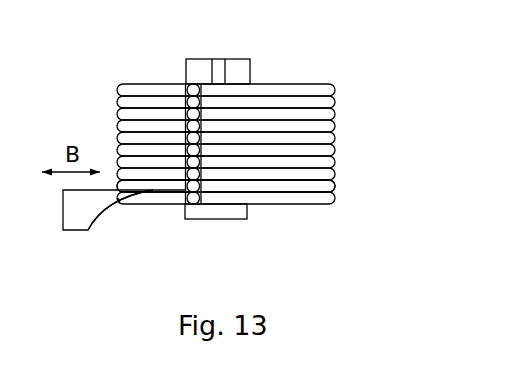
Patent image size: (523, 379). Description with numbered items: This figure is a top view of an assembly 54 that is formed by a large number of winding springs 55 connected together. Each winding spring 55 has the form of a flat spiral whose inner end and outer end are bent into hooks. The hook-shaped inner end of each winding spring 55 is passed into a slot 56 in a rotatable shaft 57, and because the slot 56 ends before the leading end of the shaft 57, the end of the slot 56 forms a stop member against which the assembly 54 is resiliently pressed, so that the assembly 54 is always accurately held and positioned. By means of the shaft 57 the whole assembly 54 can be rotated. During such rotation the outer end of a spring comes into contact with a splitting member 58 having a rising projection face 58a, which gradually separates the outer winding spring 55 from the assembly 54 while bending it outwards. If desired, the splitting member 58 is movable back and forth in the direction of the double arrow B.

The assembly 54 is at (350, 120).
The winding spring 55 is at (320, 185).
The slot 56 is at (215, 75).
The rotatable shaft 57 is at (220, 208).
The splitting member 58 is at (82, 218).
The rising projection face 58a is at (108, 213).